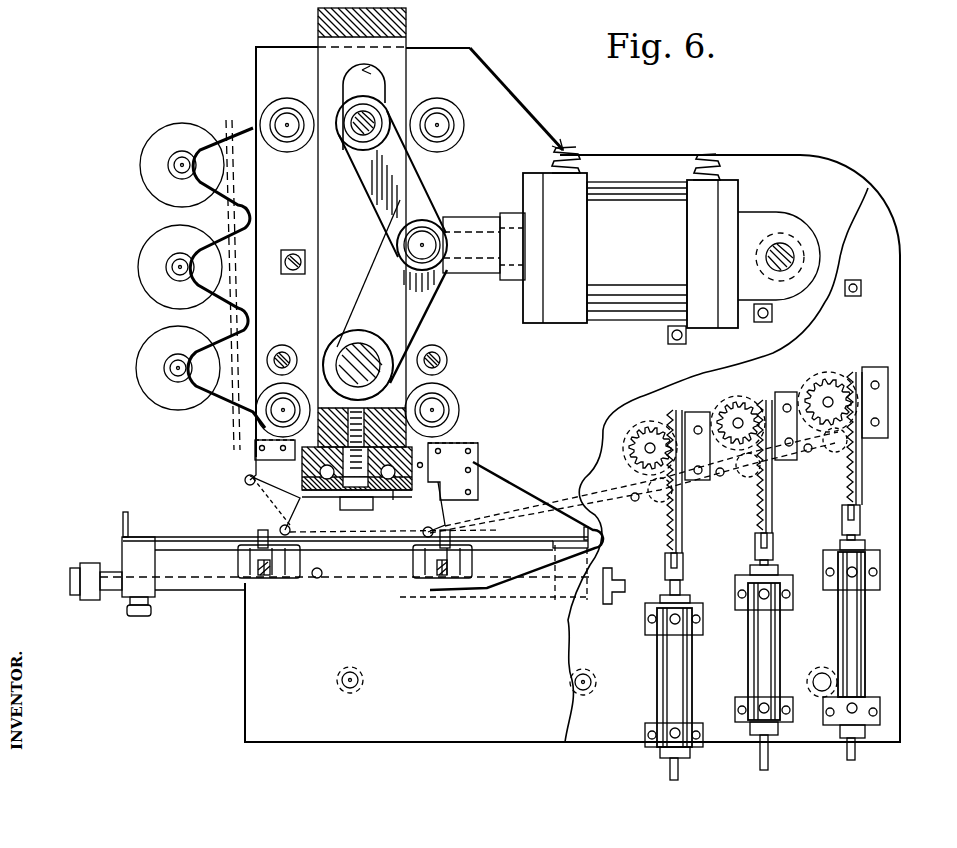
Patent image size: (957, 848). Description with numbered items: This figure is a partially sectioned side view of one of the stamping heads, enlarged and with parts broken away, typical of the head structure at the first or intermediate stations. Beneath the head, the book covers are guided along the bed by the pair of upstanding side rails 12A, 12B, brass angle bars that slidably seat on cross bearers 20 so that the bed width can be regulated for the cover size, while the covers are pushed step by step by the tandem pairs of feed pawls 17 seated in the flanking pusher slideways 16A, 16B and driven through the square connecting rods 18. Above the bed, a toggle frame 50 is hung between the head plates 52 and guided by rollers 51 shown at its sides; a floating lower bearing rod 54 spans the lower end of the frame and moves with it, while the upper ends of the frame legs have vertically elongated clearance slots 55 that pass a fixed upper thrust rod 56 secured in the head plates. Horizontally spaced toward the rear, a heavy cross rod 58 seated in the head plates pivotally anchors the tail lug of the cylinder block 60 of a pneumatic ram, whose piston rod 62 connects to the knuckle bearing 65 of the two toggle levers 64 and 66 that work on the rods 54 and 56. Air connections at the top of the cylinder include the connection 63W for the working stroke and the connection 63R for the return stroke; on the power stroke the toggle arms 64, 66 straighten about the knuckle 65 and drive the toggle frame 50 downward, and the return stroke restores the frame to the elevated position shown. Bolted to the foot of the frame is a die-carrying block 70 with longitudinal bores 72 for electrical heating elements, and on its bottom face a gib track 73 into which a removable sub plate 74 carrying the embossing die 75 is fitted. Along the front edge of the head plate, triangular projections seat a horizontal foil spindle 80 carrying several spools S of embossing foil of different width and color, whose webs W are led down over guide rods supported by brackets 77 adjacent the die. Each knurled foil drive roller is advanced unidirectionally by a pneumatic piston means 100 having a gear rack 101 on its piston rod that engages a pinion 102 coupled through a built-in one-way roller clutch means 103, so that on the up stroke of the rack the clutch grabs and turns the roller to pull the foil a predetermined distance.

The toggle frame 50 is at (419, 38).
The guide rollers 51 is at (265, 112).
The head plates 52 is at (493, 90).
The floating lower bearing rod 54 is at (345, 342).
The clearance slots 55 is at (366, 72).
The upper thrust rod 56 is at (358, 136).
The cross rod 58 is at (790, 246).
The cylinder block 60 is at (660, 250).
The piston rod 62 is at (470, 216).
The return stroke connection 63R is at (565, 145).
The working stroke connection 63W is at (706, 150).
The toggle lever 64 is at (428, 300).
The knuckle bearing 65 is at (414, 248).
The toggle lever 66 is at (432, 186).
The die-carrying block 70 is at (302, 462).
The longitudinal bores 72 is at (330, 482).
The gib track 73 is at (412, 492).
The clamp jaw 74 is at (388, 498).
The embossing die 75 is at (348, 506).
The brackets 77 is at (248, 482).
The foil spindle 80 is at (170, 173).
The spools S is at (150, 332).
The webs W is at (241, 507).
The side rail 12A is at (125, 532).
The side rail 12B is at (595, 534).
The outer pusher slideway 16A is at (240, 575).
The inner pusher slideway 16B is at (462, 578).
The feed pawls 17 is at (258, 534).
The connecting rods 18 is at (264, 578).
The cross bearers 20 is at (198, 586).
The pneumatic piston means 100 is at (840, 635).
The gear rack 101 is at (848, 497).
The pinion 102 is at (825, 400).
The one-way roller clutch means 103 is at (832, 366).